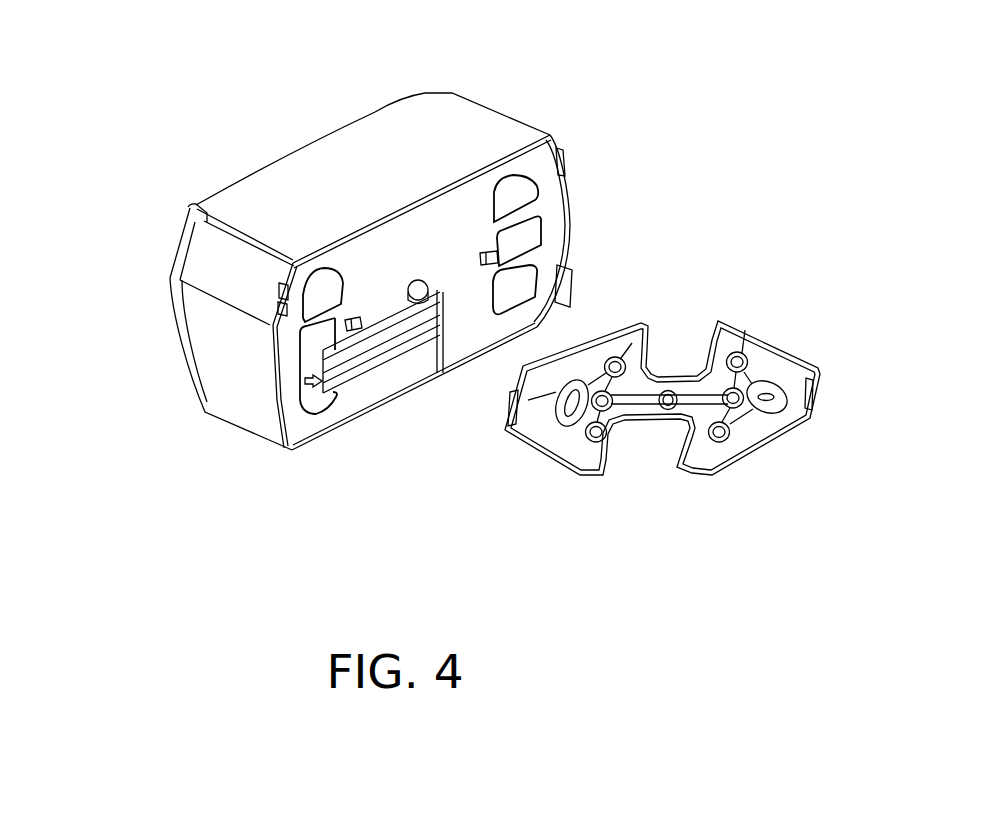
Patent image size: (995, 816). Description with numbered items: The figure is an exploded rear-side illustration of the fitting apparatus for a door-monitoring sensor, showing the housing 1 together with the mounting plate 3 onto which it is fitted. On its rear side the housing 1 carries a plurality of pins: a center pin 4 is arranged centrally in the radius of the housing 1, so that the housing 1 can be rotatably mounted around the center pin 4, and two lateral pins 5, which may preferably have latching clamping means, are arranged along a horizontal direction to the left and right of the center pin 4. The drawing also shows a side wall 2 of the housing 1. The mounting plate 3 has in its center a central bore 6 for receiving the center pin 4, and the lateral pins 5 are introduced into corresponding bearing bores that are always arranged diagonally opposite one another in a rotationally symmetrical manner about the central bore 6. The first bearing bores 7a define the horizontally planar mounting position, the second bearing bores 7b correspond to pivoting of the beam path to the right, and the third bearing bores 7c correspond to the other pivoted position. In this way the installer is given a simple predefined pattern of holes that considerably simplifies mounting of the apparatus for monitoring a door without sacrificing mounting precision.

The housing 1 is at (338, 149).
The side wall 2 is at (220, 276).
The mounting plate 3 is at (738, 327).
The center pin 4 is at (417, 300).
The lateral pins 5 is at (353, 322).
The central bore 6 is at (669, 407).
The first bearing bores 7a is at (597, 405).
The second bearing bores 7b is at (618, 363).
The third bearing bores 7c is at (742, 367).